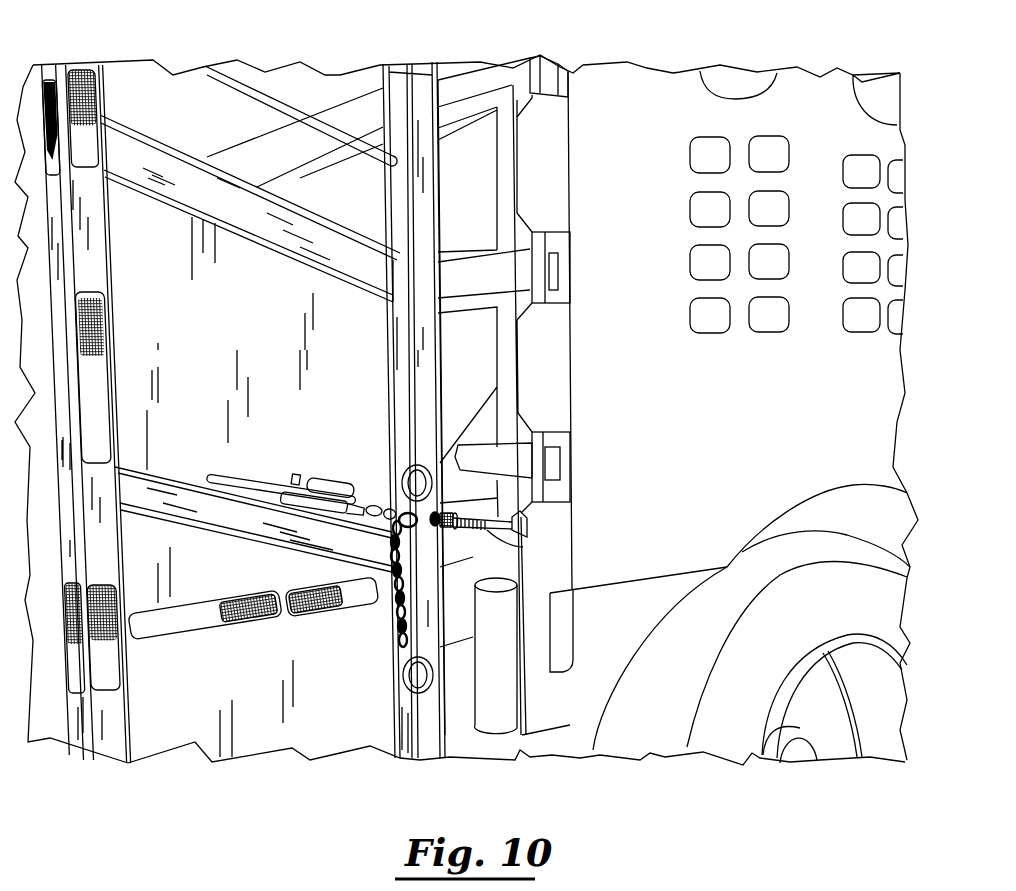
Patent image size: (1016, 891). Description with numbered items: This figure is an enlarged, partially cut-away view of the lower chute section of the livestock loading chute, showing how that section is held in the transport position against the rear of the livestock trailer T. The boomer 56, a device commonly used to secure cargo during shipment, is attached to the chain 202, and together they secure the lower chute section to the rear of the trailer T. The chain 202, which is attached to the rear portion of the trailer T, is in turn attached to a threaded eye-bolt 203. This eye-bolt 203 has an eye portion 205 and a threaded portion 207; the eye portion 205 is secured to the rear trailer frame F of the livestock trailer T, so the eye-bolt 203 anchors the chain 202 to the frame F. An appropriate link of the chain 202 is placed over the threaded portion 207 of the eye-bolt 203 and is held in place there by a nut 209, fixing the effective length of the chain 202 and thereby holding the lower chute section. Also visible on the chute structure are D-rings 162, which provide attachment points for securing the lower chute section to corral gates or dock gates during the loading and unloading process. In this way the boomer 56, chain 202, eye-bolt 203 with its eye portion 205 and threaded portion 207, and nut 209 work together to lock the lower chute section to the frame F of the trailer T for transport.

The livestock trailer T is at (783, 93).
The rear trailer frame F is at (560, 522).
The boomer 56 is at (333, 477).
The D-rings 162 is at (402, 468).
The chain 202 is at (393, 608).
The threaded eye-bolt 203 is at (510, 540).
The eye portion 205 is at (512, 517).
The threaded portion 207 is at (467, 530).
The nut 209 is at (455, 533).